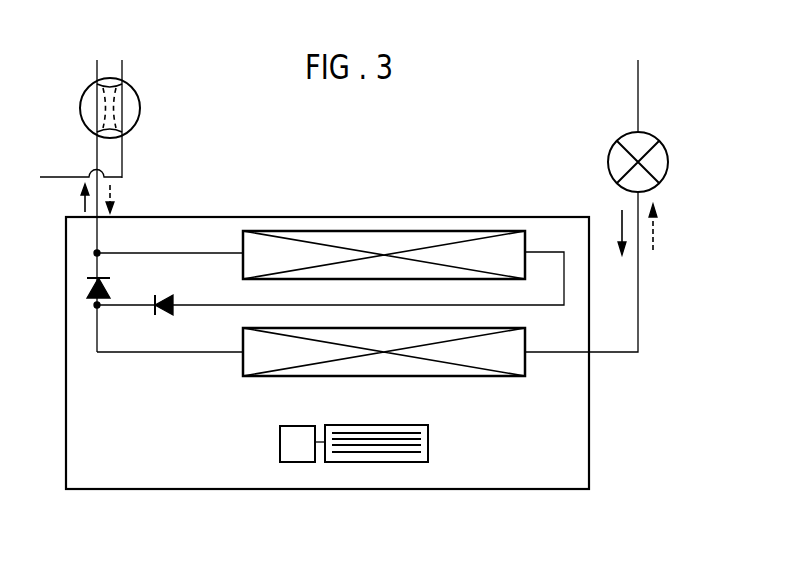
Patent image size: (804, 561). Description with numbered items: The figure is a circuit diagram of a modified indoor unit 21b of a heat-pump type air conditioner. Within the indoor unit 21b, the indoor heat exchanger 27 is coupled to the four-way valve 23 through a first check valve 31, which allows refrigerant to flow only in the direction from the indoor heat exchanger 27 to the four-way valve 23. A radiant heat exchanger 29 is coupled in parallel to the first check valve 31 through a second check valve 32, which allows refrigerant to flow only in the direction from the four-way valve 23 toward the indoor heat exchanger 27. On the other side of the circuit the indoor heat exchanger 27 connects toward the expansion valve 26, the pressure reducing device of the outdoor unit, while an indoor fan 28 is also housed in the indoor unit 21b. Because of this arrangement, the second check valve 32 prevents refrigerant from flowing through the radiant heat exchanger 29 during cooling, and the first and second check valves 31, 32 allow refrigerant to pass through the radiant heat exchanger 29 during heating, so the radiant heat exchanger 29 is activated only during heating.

The modified indoor unit 21b is at (161, 489).
The four-way valve 23 is at (139, 107).
The expansion valve 26 is at (618, 150).
The indoor heat exchanger 27 is at (488, 376).
The indoor fan 28 is at (428, 440).
The radiant heat exchanger 29 is at (412, 237).
The first check valve 31 is at (87, 293).
The second check valve 32 is at (170, 311).